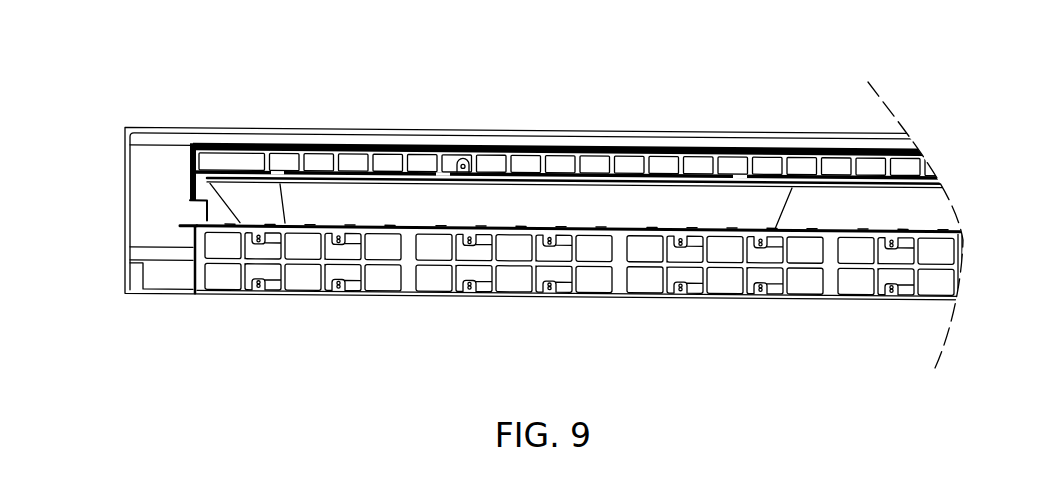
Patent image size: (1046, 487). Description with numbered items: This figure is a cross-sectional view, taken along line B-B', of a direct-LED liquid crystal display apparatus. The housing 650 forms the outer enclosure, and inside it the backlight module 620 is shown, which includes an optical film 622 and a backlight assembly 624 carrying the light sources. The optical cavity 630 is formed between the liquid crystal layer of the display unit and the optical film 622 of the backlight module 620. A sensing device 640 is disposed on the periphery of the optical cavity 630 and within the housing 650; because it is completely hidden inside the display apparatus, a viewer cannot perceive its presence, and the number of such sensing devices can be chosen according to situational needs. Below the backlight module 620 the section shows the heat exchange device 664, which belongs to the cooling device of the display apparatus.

The backlight module 620 is at (607, 58).
The optical film 622 is at (602, 197).
The backlight assembly 624 is at (632, 225).
The optical cavity 630 is at (353, 158).
The sensing device 640 is at (462, 153).
The housing 650 is at (125, 185).
The heat exchange device 664 is at (337, 277).